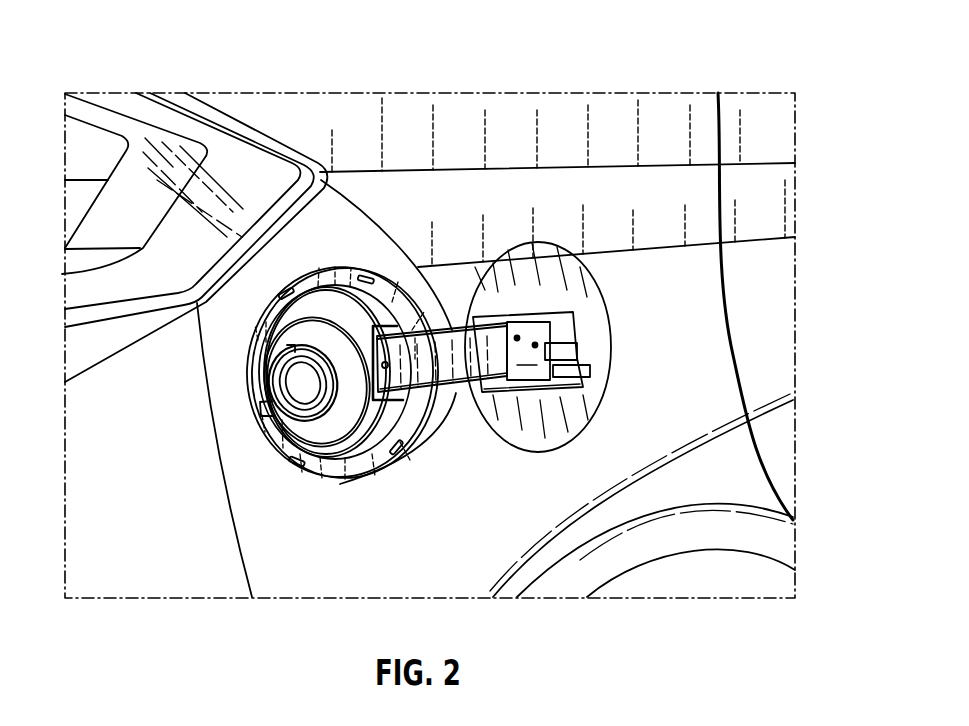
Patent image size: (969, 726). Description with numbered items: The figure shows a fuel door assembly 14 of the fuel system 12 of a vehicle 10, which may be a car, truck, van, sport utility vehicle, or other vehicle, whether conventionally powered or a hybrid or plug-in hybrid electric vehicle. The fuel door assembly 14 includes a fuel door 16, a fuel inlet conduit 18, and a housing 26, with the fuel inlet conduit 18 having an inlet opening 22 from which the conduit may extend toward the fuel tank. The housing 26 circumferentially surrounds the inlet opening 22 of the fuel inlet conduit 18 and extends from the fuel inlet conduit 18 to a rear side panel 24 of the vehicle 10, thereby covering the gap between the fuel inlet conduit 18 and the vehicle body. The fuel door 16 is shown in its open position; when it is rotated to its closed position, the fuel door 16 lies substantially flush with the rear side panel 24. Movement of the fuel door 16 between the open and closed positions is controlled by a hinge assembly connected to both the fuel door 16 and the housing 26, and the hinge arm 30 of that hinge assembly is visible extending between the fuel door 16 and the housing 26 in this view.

The vehicle 10 is at (778, 53).
The fuel system 12 is at (370, 265).
The fuel door assembly 14 is at (301, 480).
The fuel door 16 is at (573, 298).
The fuel inlet conduit 18 is at (279, 369).
The inlet opening 22 is at (295, 393).
The rear side panel 24 is at (425, 572).
The housing 26 is at (358, 450).
The hinge arm 30 is at (453, 378).